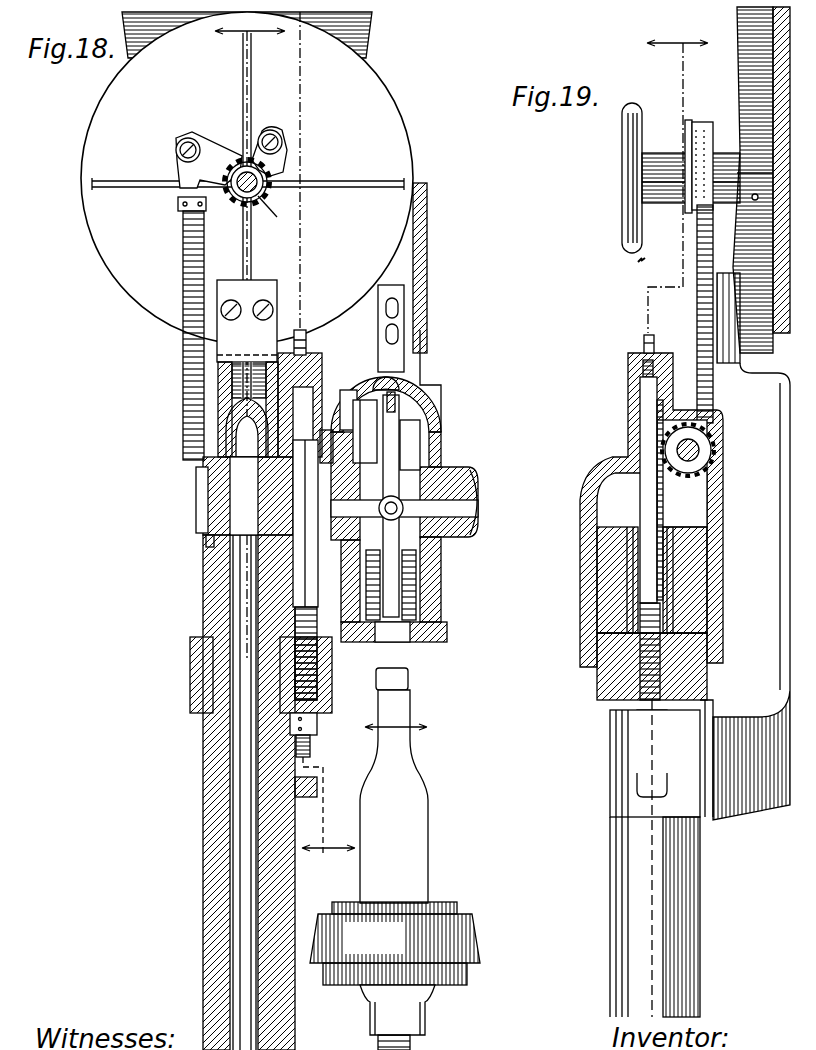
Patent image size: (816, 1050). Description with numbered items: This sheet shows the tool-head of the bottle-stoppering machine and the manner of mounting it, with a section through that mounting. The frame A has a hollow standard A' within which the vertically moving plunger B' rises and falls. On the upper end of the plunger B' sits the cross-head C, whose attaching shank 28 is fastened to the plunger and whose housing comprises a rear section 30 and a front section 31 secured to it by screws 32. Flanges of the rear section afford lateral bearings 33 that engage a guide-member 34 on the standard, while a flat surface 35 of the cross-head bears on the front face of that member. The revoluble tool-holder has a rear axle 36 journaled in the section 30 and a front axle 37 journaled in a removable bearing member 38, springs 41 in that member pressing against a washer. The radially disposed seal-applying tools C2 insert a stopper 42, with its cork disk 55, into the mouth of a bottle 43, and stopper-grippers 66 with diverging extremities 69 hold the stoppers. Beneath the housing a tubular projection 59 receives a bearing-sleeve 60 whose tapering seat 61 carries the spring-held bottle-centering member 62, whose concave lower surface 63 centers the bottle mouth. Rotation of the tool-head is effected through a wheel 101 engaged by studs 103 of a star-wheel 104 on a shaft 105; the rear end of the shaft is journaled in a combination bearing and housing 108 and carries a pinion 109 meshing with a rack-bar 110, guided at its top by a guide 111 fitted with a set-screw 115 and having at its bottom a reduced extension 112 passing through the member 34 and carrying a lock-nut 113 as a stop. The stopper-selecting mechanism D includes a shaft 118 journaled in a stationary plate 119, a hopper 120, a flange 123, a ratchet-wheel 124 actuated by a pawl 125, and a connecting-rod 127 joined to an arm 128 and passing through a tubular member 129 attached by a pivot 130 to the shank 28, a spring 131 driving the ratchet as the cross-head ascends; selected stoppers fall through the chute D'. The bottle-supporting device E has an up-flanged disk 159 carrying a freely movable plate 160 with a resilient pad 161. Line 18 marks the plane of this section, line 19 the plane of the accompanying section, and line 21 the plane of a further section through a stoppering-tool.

In FIG. 19, the section line 18 is at (677, 31).
In FIG. 18, the section line 19 is at (328, 865).
In FIG. 18, the section line 21 is at (396, 738).
In FIG. 18, the attaching shank 28 is at (212, 541).
In FIG. 18, the rear housing section 30 is at (423, 363).
In FIG. 19, the rear housing section 30 is at (691, 580).
In FIG. 18, the front housing section 31 is at (322, 570).
In FIG. 18, the screws 32 is at (250, 22).
In FIG. 18, the lateral bearings 33 is at (480, 626).
In FIG. 19, the lateral bearings 33 is at (727, 612).
In FIG. 18, the guide-member 34 is at (327, 697).
In FIG. 19, the guide-member 34 is at (700, 690).
In FIG. 18, the flat surface 35 is at (320, 647).
In FIG. 18, the rear axle 36 is at (248, 496).
In FIG. 18, the front axle 37 is at (477, 503).
In FIG. 18, the removable bearing member 38 is at (467, 489).
In FIG. 18, the springs 41 is at (398, 470).
In FIG. 18, the stopper 42 is at (392, 300).
In FIG. 18, the bottle 43 is at (407, 843).
In FIG. 18, the cork disk 55 is at (413, 600).
In FIG. 18, the tubular projection 59 is at (430, 600).
In FIG. 18, the bearing-sleeve 60 is at (447, 640).
In FIG. 18, the tapering seat 61 is at (407, 640).
In FIG. 18, the bottle-centering member 62 is at (413, 620).
In FIG. 18, the concave lower surface 63 is at (407, 647).
In FIG. 18, the stopper-grippers 66 is at (413, 430).
In FIG. 18, the diverging extremities 69 is at (423, 583).
In FIG. 18, the wheel 101 is at (400, 480).
In FIG. 18, the studs 103 is at (380, 378).
In FIG. 18, the star-wheel 104 is at (360, 420).
In FIG. 19, the shaft 105 is at (699, 450).
In FIG. 18, the combination bearing and housing 108 is at (200, 393).
In FIG. 19, the combination bearing and housing 108 is at (703, 412).
In FIG. 19, the pinion 109 is at (712, 437).
In FIG. 19, the rack-bar 110 is at (647, 495).
In FIG. 18, the guide 111 is at (312, 355).
In FIG. 19, the guide 111 is at (630, 365).
In FIG. 19, the reduced extension 112 is at (647, 738).
In FIG. 18, the lock-nut 113 is at (317, 720).
In FIG. 19, the lock-nut 113 is at (640, 715).
In FIG. 18, the set-screw 115 is at (299, 332).
In FIG. 19, the set-screw 115 is at (648, 332).
In FIG. 18, the shaft 118 is at (256, 188).
In FIG. 18, the stationary plate 119 is at (376, 101).
In FIG. 19, the stationary plate 119 is at (750, 103).
In FIG. 18, the hopper 120 is at (366, 40).
In FIG. 19, the flange 123 is at (766, 170).
In FIG. 18, the ratchet-wheel 124 is at (278, 224).
In FIG. 19, the ratchet-wheel 124 is at (688, 210).
In FIG. 18, the pawl 125 is at (288, 152).
In FIG. 19, the pawl 125 is at (688, 143).
In FIG. 18, the connecting-rod 127 is at (178, 199).
In FIG. 19, the connecting-rod 127 is at (697, 272).
In FIG. 18, the arm 128 is at (207, 150).
In FIG. 18, the tubular member 129 is at (198, 486).
In FIG. 18, the pivot 130 is at (197, 503).
In FIG. 18, the spring 131 is at (183, 258).
In FIG. 19, the spring 131 is at (697, 243).
In FIG. 18, the up-flanged disk 159 is at (357, 975).
In FIG. 18, the down-flanged plate 160 is at (395, 938).
In FIG. 18, the resilient pad 161 is at (440, 906).
In FIG. 19, the frame A is at (618, 858).
In FIG. 18, the hollow standard A' is at (155, 819).
In FIG. 18, the plunger B' is at (222, 792).
In FIG. 19, the plunger B' is at (601, 580).
In FIG. 18, the cross-head C is at (387, 507).
In FIG. 19, the cross-head C is at (643, 510).
In FIG. 18, the seal-applying tools C2 is at (403, 420).
In FIG. 18, the stopper-selecting mechanism D is at (398, 58).
In FIG. 18, the chute D' is at (430, 307).
In FIG. 18, the bottle-supporting device E is at (460, 1014).